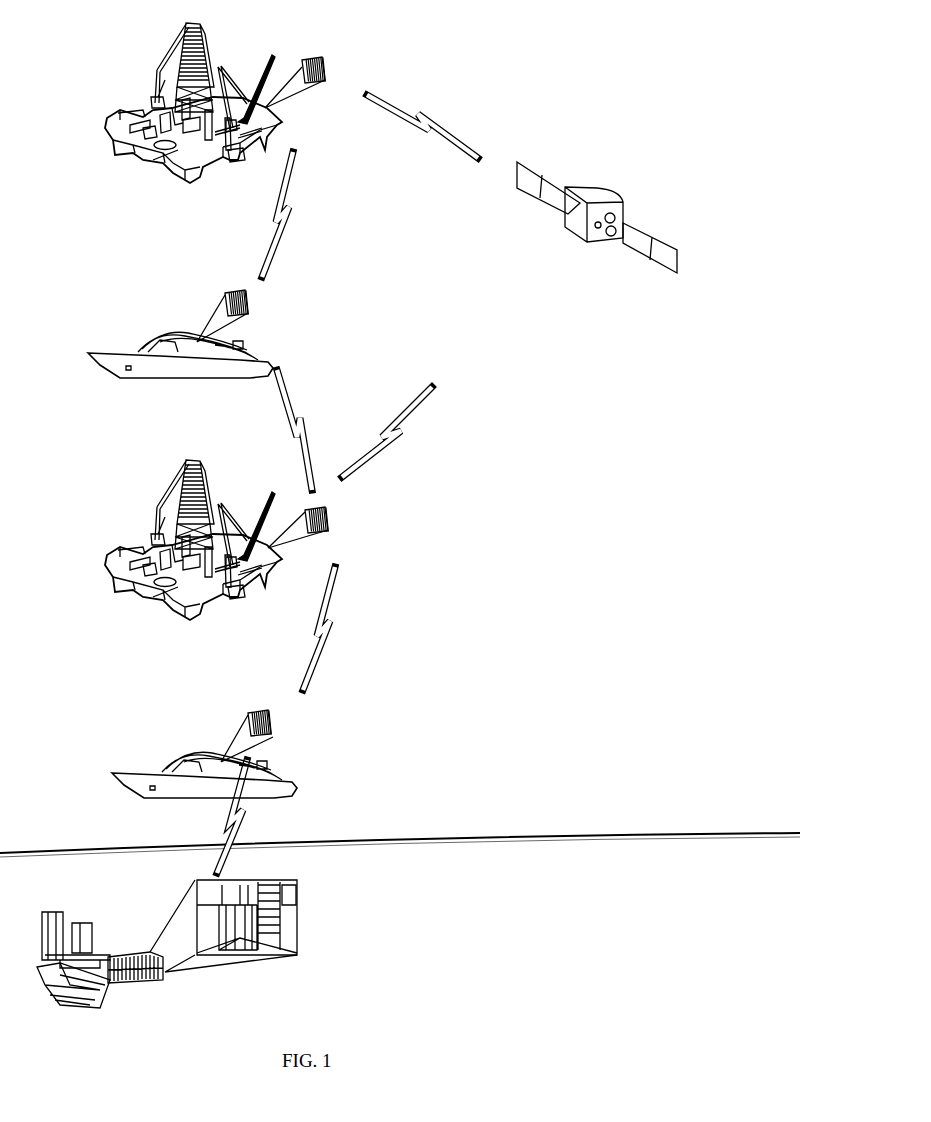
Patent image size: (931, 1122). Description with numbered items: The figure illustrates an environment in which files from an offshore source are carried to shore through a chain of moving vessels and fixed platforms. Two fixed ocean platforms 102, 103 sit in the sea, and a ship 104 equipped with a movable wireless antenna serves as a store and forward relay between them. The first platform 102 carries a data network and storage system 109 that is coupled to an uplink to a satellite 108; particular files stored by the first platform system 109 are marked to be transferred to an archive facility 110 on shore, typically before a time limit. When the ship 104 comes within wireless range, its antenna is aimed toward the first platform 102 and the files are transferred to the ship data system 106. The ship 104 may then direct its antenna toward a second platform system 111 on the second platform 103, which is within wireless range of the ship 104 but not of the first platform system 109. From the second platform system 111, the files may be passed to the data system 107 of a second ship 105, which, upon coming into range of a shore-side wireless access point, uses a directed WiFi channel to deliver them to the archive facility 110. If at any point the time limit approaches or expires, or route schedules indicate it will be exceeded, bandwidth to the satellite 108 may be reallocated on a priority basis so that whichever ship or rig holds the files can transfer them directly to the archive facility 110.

The first platform 102 is at (233, 153).
The second platform 103 is at (262, 590).
The ship 104 is at (267, 367).
The second ship 105 is at (295, 787).
The ship data system 106 is at (250, 303).
The second ship data system 107 is at (275, 724).
The satellite 108 is at (585, 243).
The first platform system 109 is at (328, 72).
The archive facility 110 is at (205, 920).
The second platform system 111 is at (330, 522).